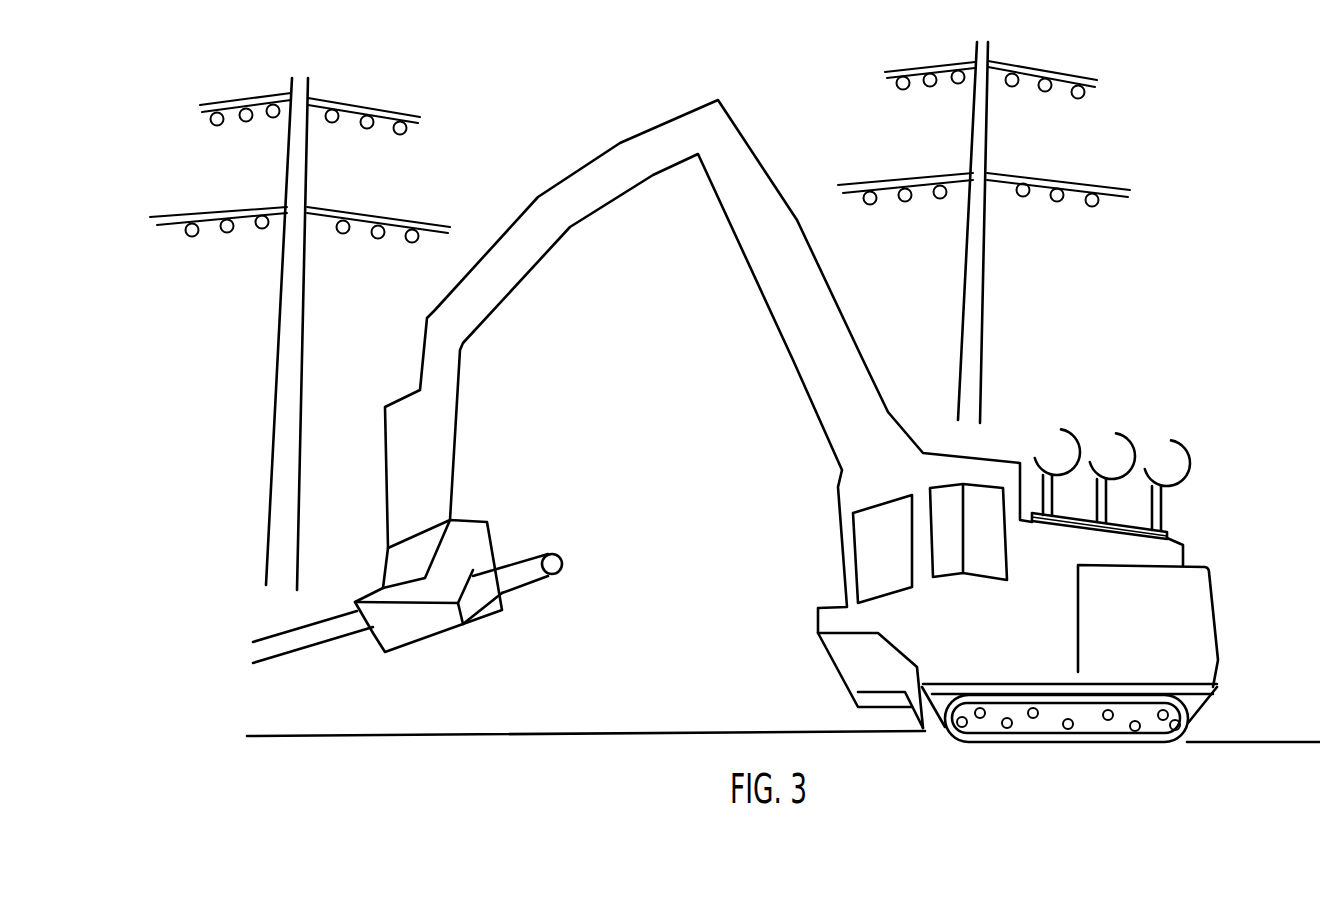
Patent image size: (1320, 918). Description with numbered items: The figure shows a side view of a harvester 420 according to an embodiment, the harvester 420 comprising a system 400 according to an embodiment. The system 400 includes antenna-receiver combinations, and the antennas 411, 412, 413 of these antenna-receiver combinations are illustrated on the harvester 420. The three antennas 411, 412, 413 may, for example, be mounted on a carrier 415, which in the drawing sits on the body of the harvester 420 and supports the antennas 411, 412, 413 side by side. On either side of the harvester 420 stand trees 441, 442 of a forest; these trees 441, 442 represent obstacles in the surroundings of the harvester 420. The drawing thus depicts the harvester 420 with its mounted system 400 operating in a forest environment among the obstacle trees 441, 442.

The system 400 is at (1172, 462).
The antenna 411 is at (1075, 430).
The antenna 412 is at (1132, 437).
The antenna 413 is at (1190, 450).
The carrier 415 is at (1134, 513).
The harvester 420 is at (840, 533).
The tree 441 is at (303, 310).
The tree 442 is at (983, 275).